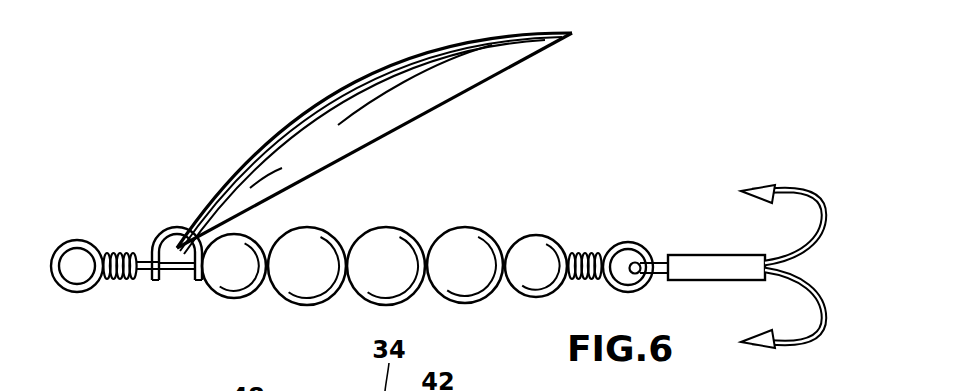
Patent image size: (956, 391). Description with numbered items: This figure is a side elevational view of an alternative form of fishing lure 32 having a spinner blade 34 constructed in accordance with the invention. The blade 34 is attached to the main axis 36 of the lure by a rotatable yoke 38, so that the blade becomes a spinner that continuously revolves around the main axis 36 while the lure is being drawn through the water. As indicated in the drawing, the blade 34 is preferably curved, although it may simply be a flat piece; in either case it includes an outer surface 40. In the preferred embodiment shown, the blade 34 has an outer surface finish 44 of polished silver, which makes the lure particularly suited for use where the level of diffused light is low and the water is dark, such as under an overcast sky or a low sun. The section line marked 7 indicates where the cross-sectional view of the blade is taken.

The fishing lure 32 is at (116, 311).
The blade 34 is at (374, 134).
The main axis 36 is at (384, 224).
The rotatable yoke 38 is at (172, 227).
The outer surface 40 is at (379, 76).
The outer surface finish 44 is at (407, 113).
The section line 7- 7 is at (578, 65).